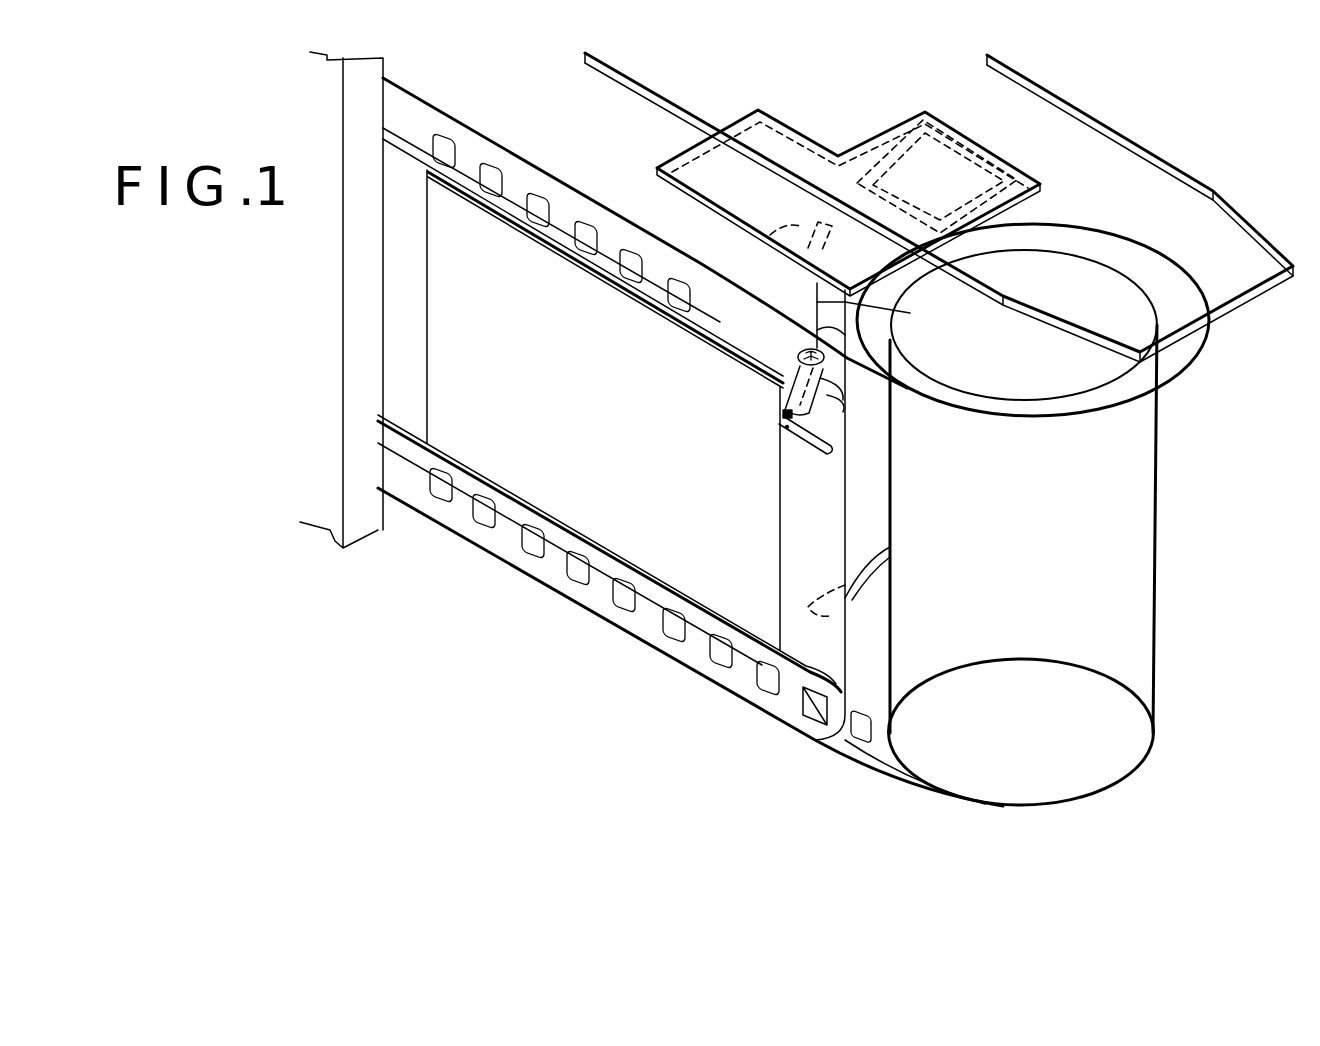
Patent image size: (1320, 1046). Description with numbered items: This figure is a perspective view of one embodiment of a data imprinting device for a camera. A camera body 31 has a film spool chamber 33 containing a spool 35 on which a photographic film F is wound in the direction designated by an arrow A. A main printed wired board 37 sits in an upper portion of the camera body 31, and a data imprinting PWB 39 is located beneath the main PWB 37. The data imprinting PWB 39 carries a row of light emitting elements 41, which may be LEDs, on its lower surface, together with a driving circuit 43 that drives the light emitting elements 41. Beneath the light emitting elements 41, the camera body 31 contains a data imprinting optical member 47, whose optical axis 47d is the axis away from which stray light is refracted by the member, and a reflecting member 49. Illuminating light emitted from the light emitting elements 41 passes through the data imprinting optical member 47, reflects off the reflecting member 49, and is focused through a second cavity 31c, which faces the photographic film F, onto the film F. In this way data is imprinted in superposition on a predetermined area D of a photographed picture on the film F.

The camera body 31 is at (773, 303).
The second cavity 31c is at (790, 414).
The film spool chamber 33 is at (1107, 228).
The spool 35 is at (1127, 507).
The main printed wired board 37 is at (1153, 180).
The data imprinting PWB 39 is at (800, 153).
The light emitting elements 41 is at (767, 240).
The driving circuit 43 is at (973, 152).
The data imprinting optical member 47 is at (848, 363).
The optical axis 47d is at (847, 311).
The reflecting member 49 is at (817, 420).
The arrow A is at (527, 595).
The predetermined area D is at (787, 427).
The photographic film F is at (693, 640).